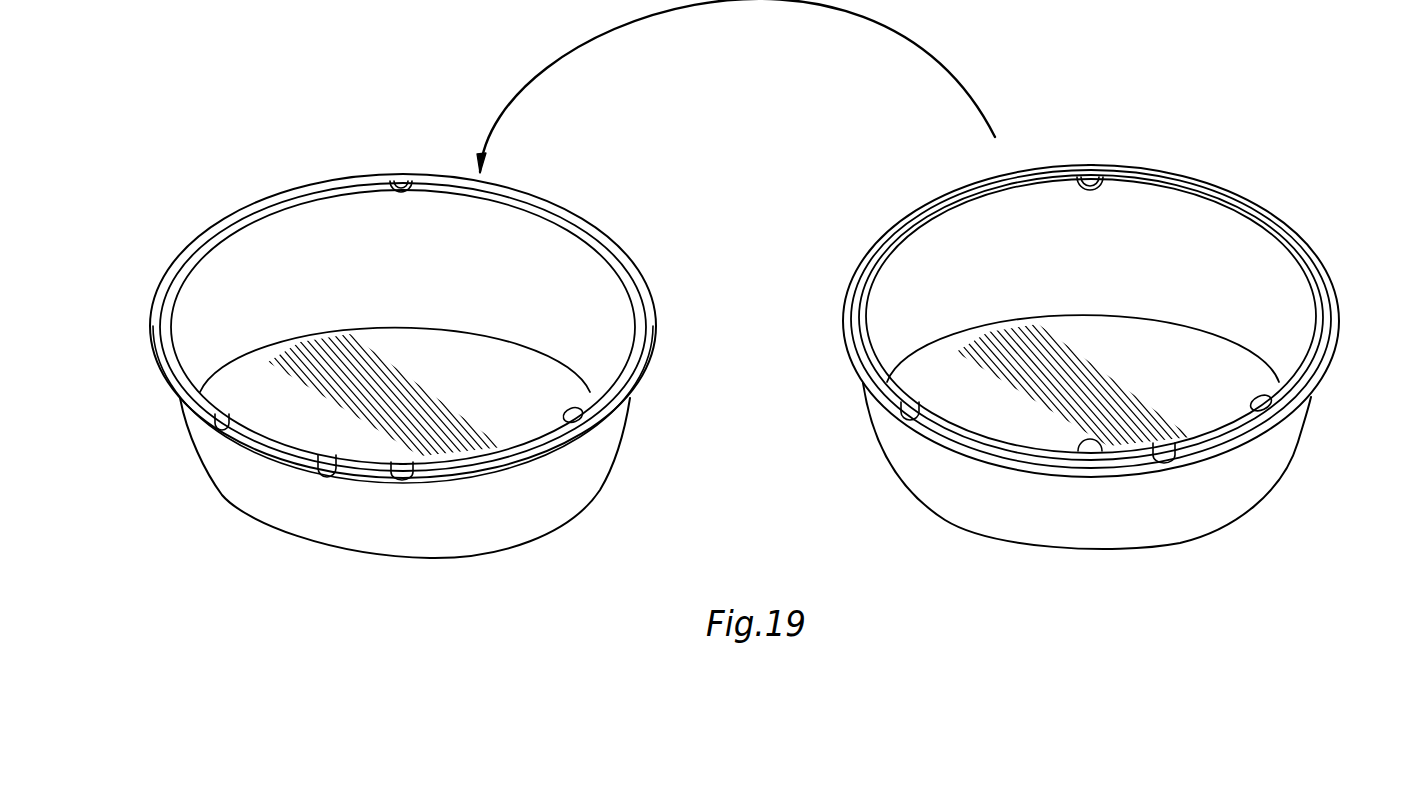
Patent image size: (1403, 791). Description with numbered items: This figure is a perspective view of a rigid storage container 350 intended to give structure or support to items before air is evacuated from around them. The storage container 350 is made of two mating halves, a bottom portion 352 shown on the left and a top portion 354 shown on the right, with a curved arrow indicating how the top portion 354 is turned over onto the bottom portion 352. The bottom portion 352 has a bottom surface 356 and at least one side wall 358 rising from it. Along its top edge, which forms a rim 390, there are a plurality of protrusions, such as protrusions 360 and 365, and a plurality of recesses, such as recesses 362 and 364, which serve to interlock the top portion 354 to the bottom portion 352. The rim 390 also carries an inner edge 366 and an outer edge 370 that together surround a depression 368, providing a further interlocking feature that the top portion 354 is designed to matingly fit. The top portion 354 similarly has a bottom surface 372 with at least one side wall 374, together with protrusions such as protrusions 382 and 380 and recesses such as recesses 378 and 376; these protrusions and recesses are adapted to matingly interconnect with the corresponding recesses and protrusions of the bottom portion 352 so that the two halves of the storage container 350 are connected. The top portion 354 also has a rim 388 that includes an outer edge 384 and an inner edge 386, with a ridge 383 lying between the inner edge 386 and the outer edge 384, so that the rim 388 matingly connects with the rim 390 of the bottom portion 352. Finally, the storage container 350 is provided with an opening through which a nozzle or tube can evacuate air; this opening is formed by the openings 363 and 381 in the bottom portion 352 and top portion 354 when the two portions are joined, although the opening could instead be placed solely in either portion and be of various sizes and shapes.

The storage container 350 is at (1212, 112).
The bottom portion 352 is at (281, 541).
The top portion 354 is at (1011, 546).
The bottom surface 356 is at (507, 362).
The side wall 358 is at (198, 307).
The protrusion 360 is at (396, 178).
The recess 362 is at (234, 421).
The opening 363 is at (330, 478).
The recess 364 is at (400, 460).
The protrusion 365 is at (566, 407).
The inner edge 366 is at (279, 212).
The depression 368 is at (620, 264).
The outer edge 370 is at (573, 219).
The bottom surface 372 is at (1196, 352).
The side wall 374 is at (888, 295).
The recess 376 is at (920, 414).
The recess 378 is at (1092, 195).
The protrusion 380 is at (1086, 445).
The opening 381 is at (1165, 462).
The protrusion 382 is at (1255, 400).
The ridge 383 is at (1308, 252).
The outer edge 384 is at (1262, 214).
The inner edge 386 is at (963, 200).
The rim 388 is at (1200, 172).
The rim 390 is at (207, 237).